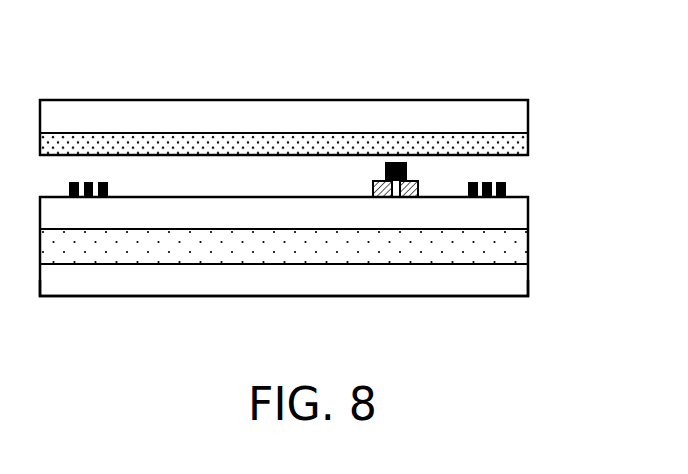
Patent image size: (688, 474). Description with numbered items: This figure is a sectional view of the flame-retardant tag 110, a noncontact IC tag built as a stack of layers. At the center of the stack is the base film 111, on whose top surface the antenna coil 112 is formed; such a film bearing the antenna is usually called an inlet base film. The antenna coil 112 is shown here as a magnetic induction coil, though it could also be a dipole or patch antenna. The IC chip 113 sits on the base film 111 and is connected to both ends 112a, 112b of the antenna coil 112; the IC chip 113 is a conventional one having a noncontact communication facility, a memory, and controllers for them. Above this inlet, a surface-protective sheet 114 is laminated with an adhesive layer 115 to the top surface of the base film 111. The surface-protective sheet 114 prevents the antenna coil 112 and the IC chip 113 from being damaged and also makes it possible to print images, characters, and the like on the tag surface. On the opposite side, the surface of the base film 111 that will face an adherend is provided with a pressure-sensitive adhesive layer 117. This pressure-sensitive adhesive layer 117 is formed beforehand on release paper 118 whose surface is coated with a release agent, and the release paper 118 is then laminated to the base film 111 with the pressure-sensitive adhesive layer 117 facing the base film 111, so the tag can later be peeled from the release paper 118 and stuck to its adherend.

The flame-retardant tag 110 is at (257, 96).
The base film 111 is at (522, 218).
The antenna coil 112 is at (118, 200).
The end of the antenna coil 112a is at (380, 197).
The end of the antenna coil 112b is at (412, 197).
The IC chip 113 is at (407, 161).
The surface-protective sheet 114 is at (527, 123).
The adhesive layer 115 is at (522, 151).
The pressure-sensitive adhesive layer 117 is at (522, 250).
The release paper 118 is at (522, 285).